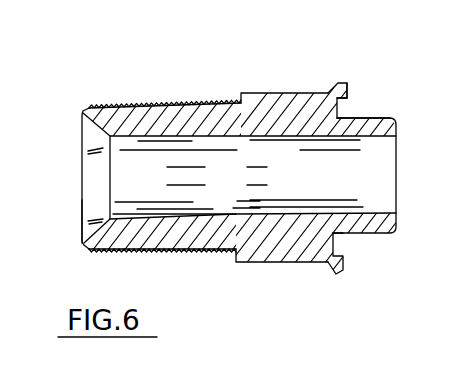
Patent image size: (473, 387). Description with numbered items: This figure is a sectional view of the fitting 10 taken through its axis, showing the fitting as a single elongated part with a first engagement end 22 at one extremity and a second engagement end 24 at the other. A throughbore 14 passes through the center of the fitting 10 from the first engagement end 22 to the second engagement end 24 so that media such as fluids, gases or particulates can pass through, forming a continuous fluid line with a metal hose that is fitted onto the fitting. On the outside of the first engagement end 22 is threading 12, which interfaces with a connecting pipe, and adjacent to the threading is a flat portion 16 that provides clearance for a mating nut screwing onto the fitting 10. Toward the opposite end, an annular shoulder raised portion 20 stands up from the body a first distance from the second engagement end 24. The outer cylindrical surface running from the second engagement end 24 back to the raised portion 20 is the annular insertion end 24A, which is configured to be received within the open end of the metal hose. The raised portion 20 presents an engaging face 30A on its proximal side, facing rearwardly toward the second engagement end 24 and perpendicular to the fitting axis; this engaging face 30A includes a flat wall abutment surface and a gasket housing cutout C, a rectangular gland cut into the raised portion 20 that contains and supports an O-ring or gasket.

The fitting 10 is at (262, 90).
The threading 12 is at (124, 103).
The throughbore 14 is at (364, 185).
The flat portion 16 is at (207, 102).
The raised portion 20 is at (341, 81).
The first engagement end 22 is at (82, 210).
The second engagement end 24 is at (396, 234).
The annular insertion end 24A is at (394, 116).
The engaging face 30A is at (358, 91).
The gasket housing cutout C is at (363, 105).